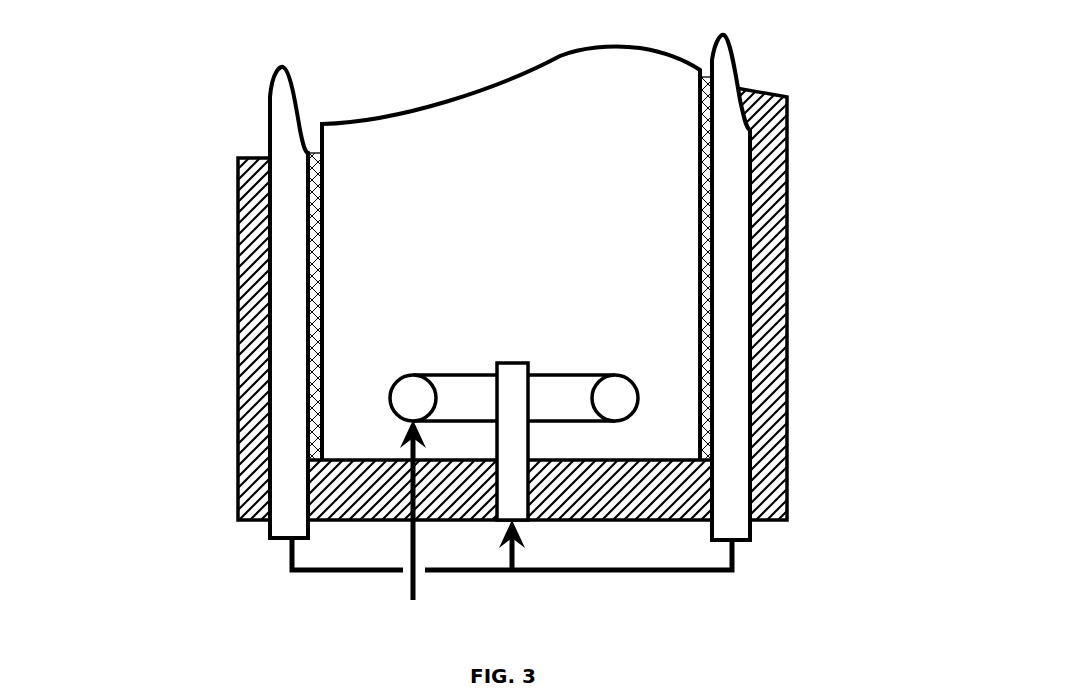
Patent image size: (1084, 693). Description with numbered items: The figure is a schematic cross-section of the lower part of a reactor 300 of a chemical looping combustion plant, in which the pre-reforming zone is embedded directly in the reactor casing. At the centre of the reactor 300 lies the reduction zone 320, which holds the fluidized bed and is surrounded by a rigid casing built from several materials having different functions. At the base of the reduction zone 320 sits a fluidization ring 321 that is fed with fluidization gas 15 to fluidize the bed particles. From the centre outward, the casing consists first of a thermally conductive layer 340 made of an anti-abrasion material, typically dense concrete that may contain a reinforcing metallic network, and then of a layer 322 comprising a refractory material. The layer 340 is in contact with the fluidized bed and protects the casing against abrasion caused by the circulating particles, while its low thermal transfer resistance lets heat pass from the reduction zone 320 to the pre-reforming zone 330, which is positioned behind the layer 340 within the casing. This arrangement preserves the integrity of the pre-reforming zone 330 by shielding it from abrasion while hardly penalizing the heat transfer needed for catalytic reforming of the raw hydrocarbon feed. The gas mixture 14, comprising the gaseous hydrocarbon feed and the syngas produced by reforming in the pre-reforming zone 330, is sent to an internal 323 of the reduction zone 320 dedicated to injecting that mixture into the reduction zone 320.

The reactor 300 is at (197, 70).
The pre-reforming zone 330 is at (288, 137).
The thermally conductive layer 340 is at (322, 187).
The reduction zone 320 is at (511, 253).
The layer comprising a refractory material 322 is at (238, 336).
The fluidization ring 321 is at (556, 370).
The internal 323 is at (530, 444).
The fluidization gas 15 is at (408, 598).
The gas mixture 14 is at (548, 572).